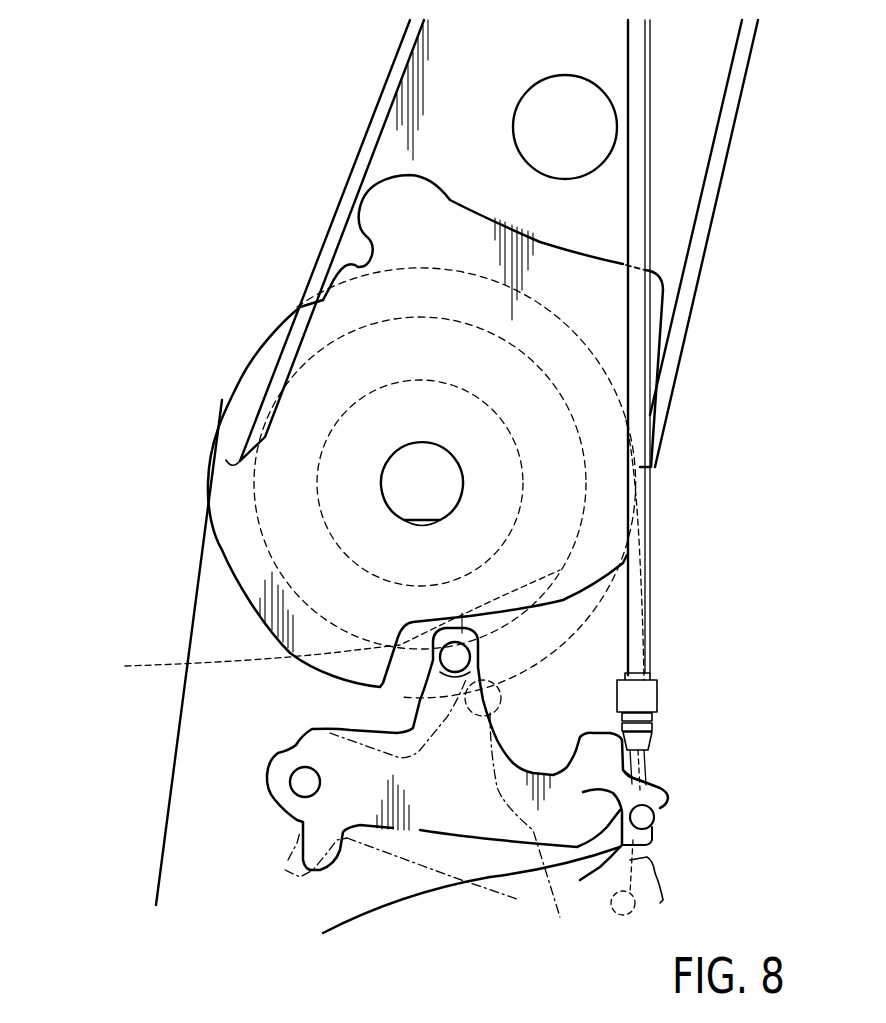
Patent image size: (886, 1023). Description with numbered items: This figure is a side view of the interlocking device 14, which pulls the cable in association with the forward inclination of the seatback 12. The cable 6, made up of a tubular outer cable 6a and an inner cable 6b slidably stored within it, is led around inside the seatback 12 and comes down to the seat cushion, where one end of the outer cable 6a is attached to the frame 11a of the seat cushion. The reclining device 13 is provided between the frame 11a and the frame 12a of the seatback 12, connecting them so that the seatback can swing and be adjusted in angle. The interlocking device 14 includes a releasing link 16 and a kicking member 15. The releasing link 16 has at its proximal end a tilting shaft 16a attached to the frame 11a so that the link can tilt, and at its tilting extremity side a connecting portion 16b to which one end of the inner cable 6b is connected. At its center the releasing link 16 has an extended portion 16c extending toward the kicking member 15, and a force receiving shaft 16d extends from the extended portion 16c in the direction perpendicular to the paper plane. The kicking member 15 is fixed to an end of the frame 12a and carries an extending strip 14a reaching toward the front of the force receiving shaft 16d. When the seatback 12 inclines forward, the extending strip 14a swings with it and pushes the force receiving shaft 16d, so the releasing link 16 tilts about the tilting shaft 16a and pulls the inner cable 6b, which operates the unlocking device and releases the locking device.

The cable 6 is at (655, 180).
The outer cable 6a is at (640, 245).
The inner cable 6b is at (662, 800).
The frame 11a is at (210, 722).
The seatback 12 is at (352, 84).
The frame 12a is at (690, 205).
The reclining device 13 is at (550, 438).
The interlocking device 14 is at (348, 546).
The extending strip 14a is at (315, 625).
The kicking member 15 is at (237, 492).
The releasing link 16 is at (298, 833).
The tilting shaft 16a is at (300, 783).
The connecting portion 16b is at (630, 777).
The extended portion 16c is at (455, 678).
The force receiving shaft 16d is at (453, 657).